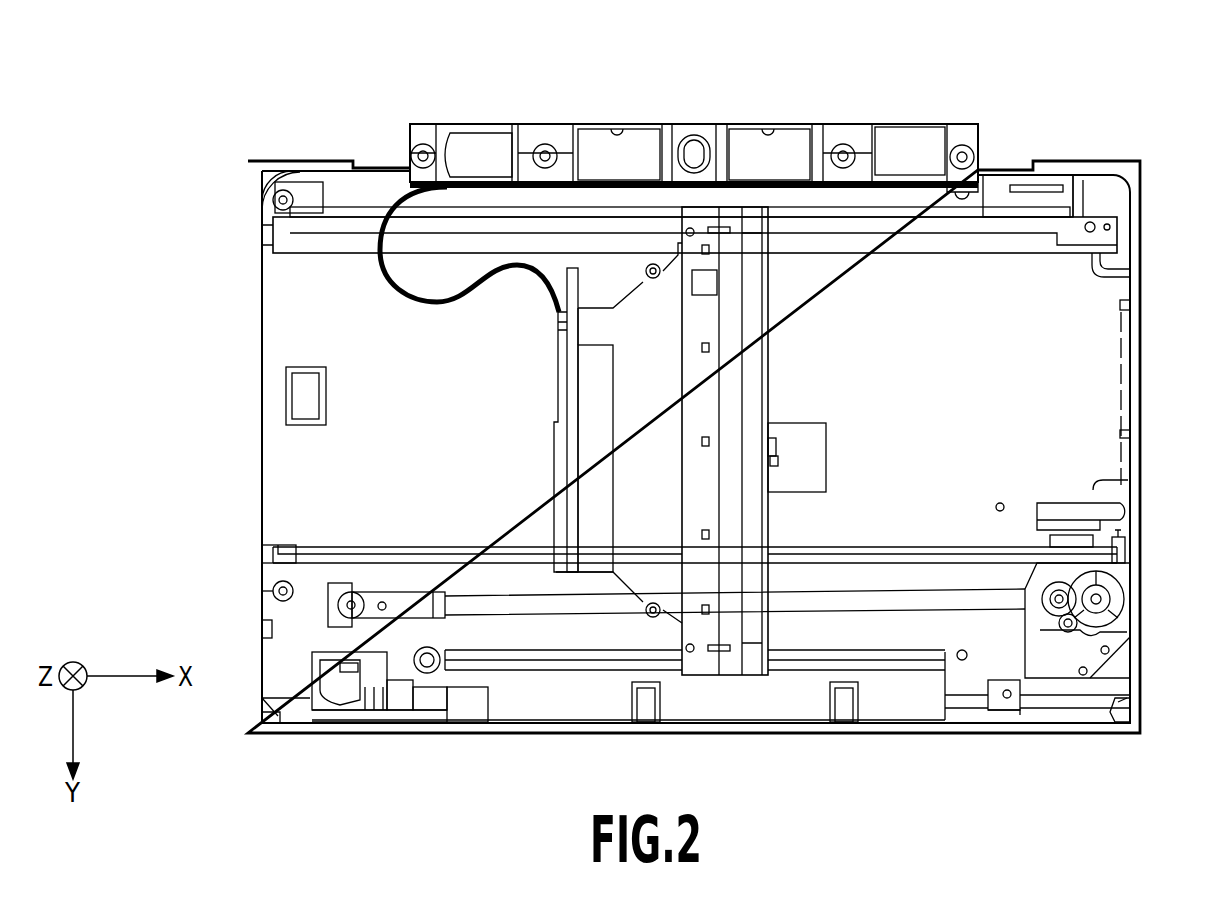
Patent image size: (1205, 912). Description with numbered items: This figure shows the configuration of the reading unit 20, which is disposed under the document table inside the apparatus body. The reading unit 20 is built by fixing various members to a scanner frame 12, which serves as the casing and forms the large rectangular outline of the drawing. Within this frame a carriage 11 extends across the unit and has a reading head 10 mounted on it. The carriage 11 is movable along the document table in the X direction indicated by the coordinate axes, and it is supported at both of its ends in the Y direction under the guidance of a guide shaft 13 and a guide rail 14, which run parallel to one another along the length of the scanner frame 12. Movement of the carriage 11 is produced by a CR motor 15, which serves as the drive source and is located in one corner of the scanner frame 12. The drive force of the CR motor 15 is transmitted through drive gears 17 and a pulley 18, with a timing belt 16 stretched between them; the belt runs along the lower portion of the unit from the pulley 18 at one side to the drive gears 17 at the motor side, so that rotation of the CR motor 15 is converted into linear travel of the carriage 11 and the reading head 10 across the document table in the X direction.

The reading head 10 is at (752, 250).
The carriage 11 is at (603, 373).
The scanner frame 12 is at (299, 160).
The guide shaft 13 is at (917, 557).
The guide rail 14 is at (907, 212).
The CR motor 15 is at (1063, 647).
The timing belt 16 is at (817, 612).
The drive gears 17 is at (1080, 637).
The pulley 18 is at (352, 618).
The reading unit 20 is at (226, 366).